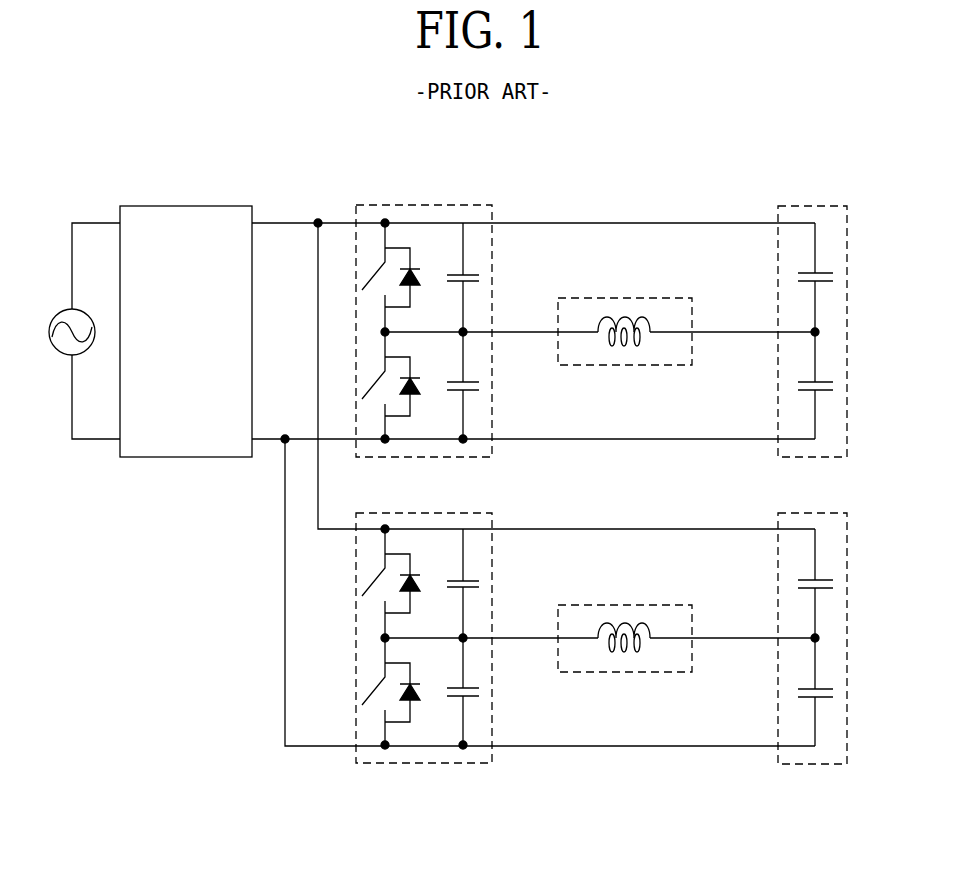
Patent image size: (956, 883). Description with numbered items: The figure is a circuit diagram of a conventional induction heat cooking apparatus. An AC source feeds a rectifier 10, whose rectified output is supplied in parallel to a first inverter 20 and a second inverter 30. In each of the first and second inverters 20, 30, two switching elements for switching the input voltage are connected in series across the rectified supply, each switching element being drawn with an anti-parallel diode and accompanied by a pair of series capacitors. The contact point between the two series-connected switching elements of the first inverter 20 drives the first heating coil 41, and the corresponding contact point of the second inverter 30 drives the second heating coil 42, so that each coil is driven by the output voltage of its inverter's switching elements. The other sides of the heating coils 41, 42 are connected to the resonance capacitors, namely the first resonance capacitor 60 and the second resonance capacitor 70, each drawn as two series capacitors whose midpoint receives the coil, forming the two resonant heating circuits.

The rectifier 10 is at (186, 206).
The first inverter 20 is at (423, 205).
The second inverter 30 is at (424, 763).
The first heating coil 41 is at (624, 298).
The second heating coil 42 is at (624, 605).
The first resonance capacitor 60 is at (825, 206).
The second resonance capacitor 70 is at (826, 764).